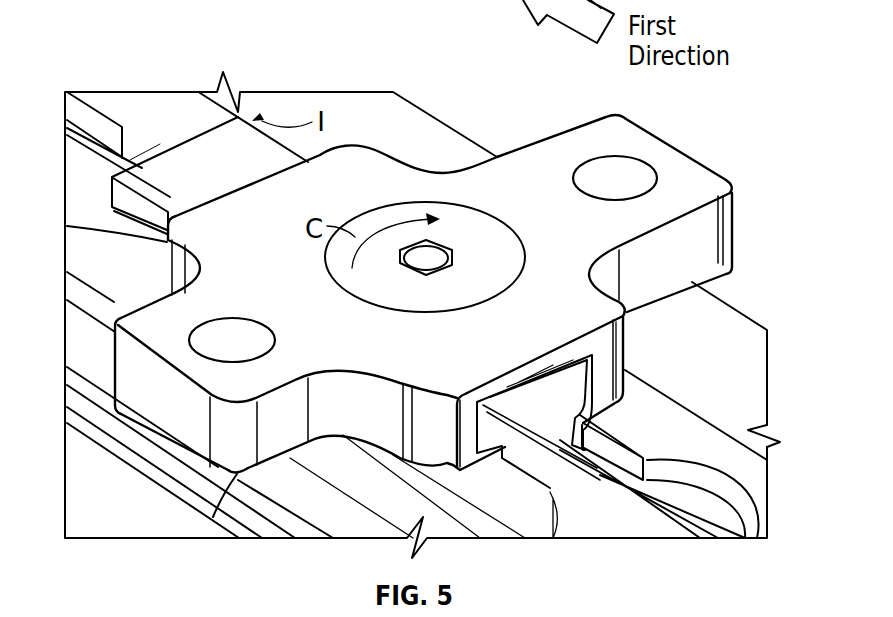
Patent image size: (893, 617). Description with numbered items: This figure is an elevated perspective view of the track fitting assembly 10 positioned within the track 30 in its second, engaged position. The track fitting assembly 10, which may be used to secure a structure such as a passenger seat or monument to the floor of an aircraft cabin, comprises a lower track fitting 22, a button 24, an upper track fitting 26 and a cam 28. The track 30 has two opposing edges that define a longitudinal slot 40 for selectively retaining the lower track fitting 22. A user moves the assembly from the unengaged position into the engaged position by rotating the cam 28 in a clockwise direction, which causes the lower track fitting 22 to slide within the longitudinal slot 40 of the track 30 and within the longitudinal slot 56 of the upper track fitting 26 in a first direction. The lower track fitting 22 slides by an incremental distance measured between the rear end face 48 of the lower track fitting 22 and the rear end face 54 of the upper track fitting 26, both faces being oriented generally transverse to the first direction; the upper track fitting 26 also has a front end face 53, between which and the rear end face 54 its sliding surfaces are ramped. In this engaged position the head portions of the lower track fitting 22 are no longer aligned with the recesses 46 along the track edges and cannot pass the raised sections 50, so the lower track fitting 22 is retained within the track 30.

The track fitting assembly 10 is at (740, 62).
The lower track fitting 22 is at (162, 168).
The button 24 is at (440, 242).
The upper track fitting 26 is at (686, 150).
The cam 28 is at (507, 255).
The track 30 is at (410, 116).
The longitudinal slot 40 is at (79, 244).
The recesses 46 is at (685, 490).
The rear end face 48 is at (197, 140).
The raised sections 50 is at (608, 455).
The front end face 53 is at (603, 345).
The rear end face 54 is at (232, 192).
The longitudinal slot 56 is at (522, 422).